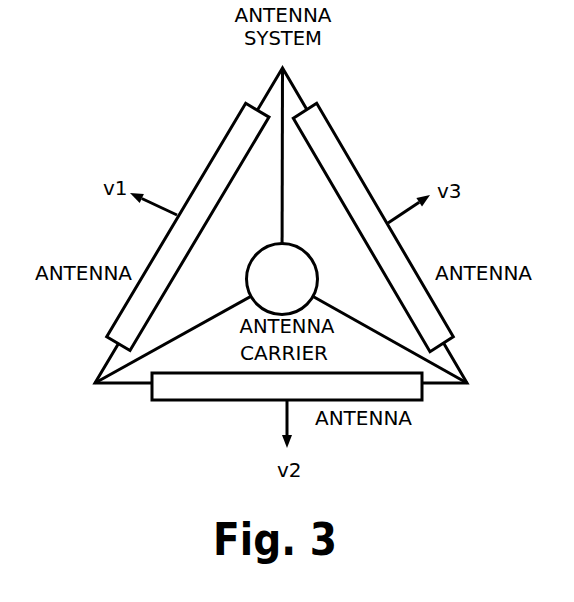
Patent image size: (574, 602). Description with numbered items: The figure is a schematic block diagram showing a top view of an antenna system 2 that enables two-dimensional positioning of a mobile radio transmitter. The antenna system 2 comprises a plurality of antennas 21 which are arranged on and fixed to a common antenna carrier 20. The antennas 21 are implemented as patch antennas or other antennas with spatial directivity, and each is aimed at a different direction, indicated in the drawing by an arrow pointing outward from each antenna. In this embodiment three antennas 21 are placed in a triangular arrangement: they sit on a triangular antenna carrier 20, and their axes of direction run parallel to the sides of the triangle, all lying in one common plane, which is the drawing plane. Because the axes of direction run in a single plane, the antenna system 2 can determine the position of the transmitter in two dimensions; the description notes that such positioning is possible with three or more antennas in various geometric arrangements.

The antenna system 2 is at (70, 380).
The antenna carrier 20 is at (270, 257).
The antenna 21 is at (130, 322).